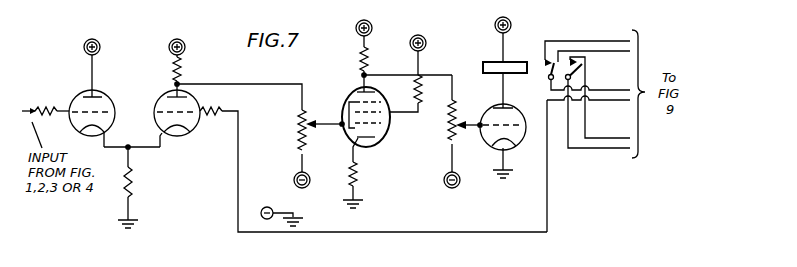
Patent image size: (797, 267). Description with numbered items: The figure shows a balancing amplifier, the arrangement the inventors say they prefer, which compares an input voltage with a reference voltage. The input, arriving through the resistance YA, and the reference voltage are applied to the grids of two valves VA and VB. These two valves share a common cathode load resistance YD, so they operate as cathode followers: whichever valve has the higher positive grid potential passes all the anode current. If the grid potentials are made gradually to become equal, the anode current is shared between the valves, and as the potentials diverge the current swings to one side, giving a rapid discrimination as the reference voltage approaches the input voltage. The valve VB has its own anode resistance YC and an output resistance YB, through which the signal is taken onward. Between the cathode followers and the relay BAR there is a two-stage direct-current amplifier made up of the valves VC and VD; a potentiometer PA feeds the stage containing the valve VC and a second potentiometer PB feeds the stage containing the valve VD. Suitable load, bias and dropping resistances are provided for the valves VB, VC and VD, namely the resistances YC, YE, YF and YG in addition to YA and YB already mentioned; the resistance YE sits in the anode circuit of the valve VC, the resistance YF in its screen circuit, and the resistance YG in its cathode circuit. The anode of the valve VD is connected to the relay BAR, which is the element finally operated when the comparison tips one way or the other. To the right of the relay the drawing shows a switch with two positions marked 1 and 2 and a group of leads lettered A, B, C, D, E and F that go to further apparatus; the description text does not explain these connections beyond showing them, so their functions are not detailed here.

The resistance YA is at (52, 102).
The valve VA is at (96, 93).
The resistance YC is at (186, 68).
The valve VB is at (186, 118).
The resistance YB is at (373, 169).
The common cathode load resistance YD is at (138, 187).
The potentiometer PA is at (259, 136).
The valve VC is at (358, 123).
The resistance YE is at (354, 56).
The resistance YF is at (408, 73).
The resistance YG is at (362, 185).
The potentiometer PB is at (453, 131).
The valve VD is at (511, 125).
The relay BAR is at (542, 49).
The switch contact 1 is at (545, 72).
The switch contact 2 is at (569, 72).
The output lead A is at (587, 43).
The output lead B is at (594, 58).
The output lead C is at (590, 82).
The output lead D is at (588, 107).
The output lead E is at (600, 97).
The output lead F is at (599, 122).